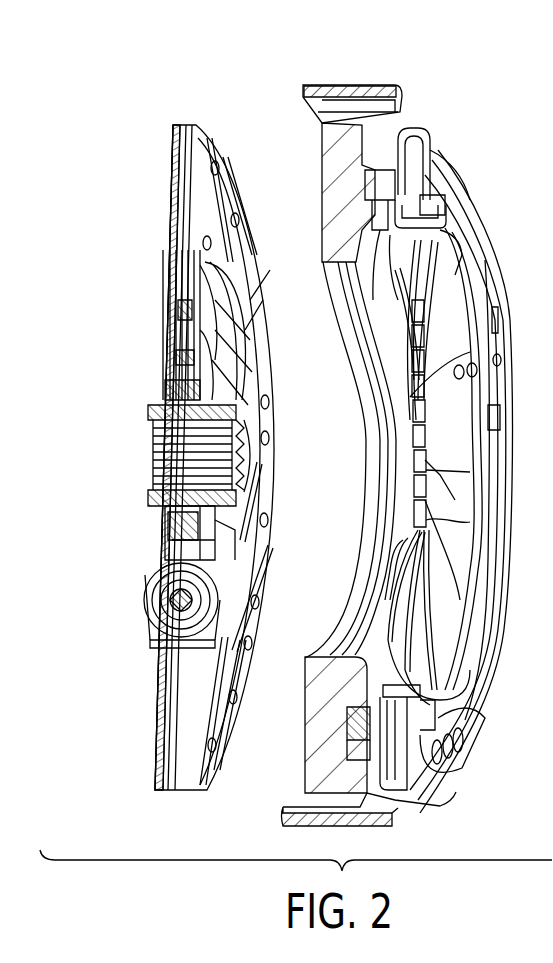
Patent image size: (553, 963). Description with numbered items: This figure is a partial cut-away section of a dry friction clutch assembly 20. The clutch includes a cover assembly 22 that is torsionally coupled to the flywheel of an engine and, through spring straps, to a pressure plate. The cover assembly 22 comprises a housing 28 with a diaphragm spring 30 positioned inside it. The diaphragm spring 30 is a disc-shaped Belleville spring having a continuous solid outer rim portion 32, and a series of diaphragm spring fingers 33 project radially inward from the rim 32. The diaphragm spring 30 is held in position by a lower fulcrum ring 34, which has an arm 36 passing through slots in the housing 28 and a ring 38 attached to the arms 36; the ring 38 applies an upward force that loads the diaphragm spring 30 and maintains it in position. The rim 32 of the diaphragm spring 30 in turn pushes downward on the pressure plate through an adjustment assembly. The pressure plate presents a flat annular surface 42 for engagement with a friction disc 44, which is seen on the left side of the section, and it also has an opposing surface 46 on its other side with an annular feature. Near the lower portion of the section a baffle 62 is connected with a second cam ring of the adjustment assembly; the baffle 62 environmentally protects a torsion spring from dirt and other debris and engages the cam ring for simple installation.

The dry friction clutch assembly 20 is at (465, 90).
The cover assembly 22 is at (488, 240).
The housing 28 is at (500, 362).
The diaphragm spring 30 is at (453, 567).
The outer rim portion 32 is at (398, 172).
The diaphragm spring fingers 33 is at (400, 348).
The lower fulcrum ring 34 is at (373, 267).
The arm 36 is at (432, 208).
The ring 38 is at (380, 217).
The flat annular surface 42 is at (305, 768).
The friction disc 44 is at (218, 143).
The opposing surface 46 is at (352, 600).
The baffle 62 is at (345, 730).